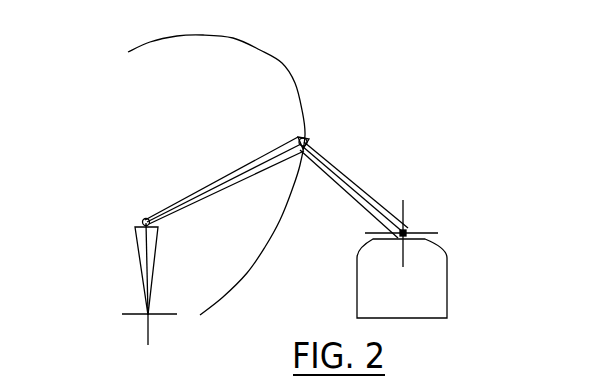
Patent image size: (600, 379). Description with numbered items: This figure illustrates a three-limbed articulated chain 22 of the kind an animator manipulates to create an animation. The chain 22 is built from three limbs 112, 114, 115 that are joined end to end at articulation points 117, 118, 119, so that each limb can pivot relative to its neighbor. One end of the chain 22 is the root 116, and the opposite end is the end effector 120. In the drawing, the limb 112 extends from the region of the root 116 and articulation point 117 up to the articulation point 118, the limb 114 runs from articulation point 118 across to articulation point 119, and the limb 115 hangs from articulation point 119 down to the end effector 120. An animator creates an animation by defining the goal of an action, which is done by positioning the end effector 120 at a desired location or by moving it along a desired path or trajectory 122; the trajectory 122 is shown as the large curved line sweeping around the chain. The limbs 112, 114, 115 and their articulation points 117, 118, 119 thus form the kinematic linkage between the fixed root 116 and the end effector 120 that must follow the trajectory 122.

The articulated chain 22 is at (353, 164).
The limb 112 is at (355, 198).
The limb 114 is at (223, 192).
The limb 115 is at (138, 263).
The root 116 is at (410, 228).
The articulation point 117 is at (412, 211).
The articulation point 118 is at (305, 137).
The articulation point 119 is at (140, 218).
The end effector 120 is at (150, 318).
The trajectory 122 is at (282, 63).